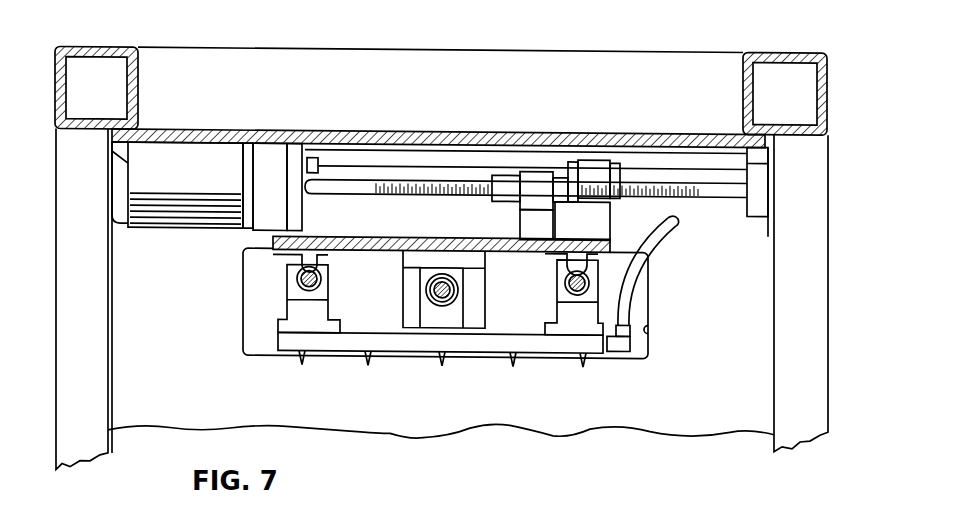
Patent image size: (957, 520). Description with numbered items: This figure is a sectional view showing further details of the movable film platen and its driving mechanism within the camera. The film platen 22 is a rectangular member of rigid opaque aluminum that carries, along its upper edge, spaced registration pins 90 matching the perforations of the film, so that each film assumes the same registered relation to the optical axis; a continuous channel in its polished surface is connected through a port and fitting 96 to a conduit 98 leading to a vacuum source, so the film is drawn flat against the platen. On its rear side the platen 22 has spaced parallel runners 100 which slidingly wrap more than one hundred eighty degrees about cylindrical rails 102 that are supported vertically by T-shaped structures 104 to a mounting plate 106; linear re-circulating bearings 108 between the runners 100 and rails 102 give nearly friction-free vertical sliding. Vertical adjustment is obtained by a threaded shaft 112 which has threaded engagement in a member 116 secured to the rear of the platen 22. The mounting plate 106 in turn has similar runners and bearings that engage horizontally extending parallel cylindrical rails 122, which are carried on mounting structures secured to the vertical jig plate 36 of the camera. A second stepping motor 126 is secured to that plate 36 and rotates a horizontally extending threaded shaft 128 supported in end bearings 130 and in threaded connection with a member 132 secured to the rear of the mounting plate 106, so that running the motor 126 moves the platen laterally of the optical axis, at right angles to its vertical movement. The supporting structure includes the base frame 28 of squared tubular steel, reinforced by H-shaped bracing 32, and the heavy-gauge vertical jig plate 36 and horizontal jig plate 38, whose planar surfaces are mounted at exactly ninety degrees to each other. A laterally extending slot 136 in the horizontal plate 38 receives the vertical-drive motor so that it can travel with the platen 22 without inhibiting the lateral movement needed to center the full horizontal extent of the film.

The film platen 22 is at (552, 342).
The base frame 28 is at (108, 383).
The H-shaped bracing 32 is at (88, 45).
The vertical jig plate 36 is at (402, 128).
The horizontal jig plate 38 is at (560, 420).
The registration pins 90 is at (368, 352).
The port and fitting 96 is at (618, 341).
The conduit 98 is at (648, 299).
The runners 100 is at (290, 287).
The cylindrical rails 102 is at (298, 275).
The T-shaped structures 104 is at (297, 252).
The mounting plate 106 is at (375, 234).
The linear re-circulating bearings 108 is at (326, 271).
The threaded shaft 112 is at (455, 283).
The member 116 is at (422, 298).
The cylindrical rails 122 is at (697, 171).
The second stepping motor 126 is at (173, 226).
The threaded shaft 128 is at (676, 163).
The end bearings 130 is at (297, 145).
The member 132 is at (538, 166).
The slot 136 is at (648, 328).